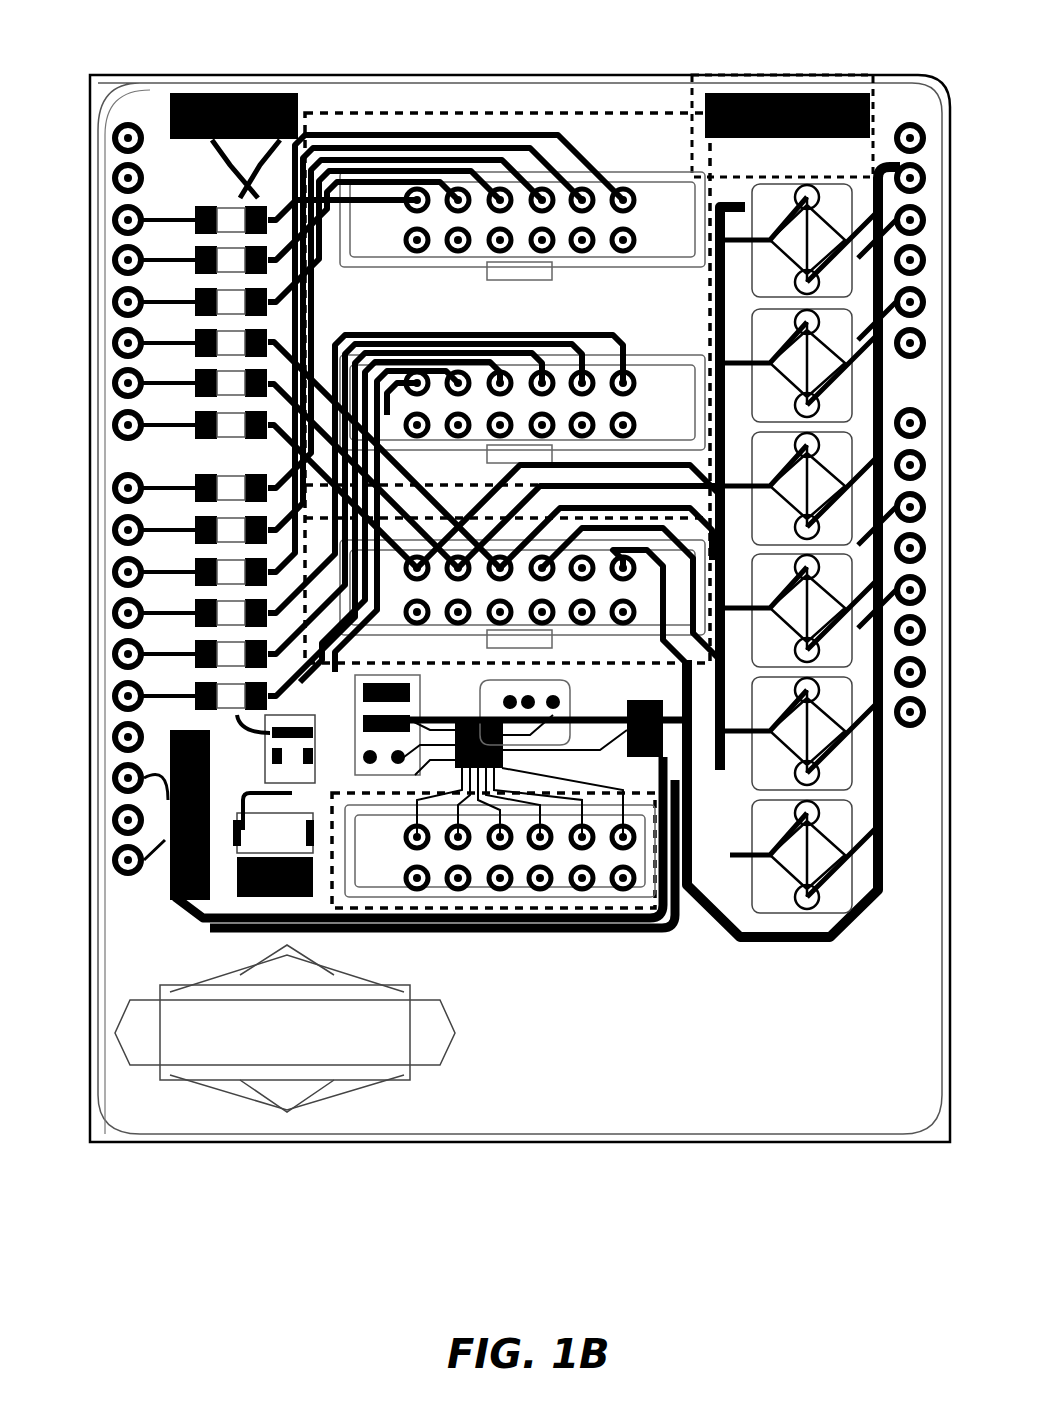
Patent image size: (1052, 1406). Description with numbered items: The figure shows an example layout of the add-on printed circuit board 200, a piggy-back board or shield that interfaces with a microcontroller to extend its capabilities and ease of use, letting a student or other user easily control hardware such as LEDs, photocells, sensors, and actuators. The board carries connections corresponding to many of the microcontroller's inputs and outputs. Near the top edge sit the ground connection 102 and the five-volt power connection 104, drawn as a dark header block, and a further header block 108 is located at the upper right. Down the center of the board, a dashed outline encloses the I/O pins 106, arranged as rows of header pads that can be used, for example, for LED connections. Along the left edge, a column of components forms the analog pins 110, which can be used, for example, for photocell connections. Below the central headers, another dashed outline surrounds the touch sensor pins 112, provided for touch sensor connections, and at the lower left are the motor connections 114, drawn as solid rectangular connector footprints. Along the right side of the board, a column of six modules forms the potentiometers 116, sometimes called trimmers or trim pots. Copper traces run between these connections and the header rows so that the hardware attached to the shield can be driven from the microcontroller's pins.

The HyperDuino shield circuit board 200 is at (112, 52).
The ground connection 102 is at (196, 94).
The power connection 104 is at (243, 94).
The I/O pins 106 is at (363, 112).
The I2C / power header 108 is at (746, 73).
The analog pins 110 is at (307, 637).
The touch sensor pins 112 is at (330, 893).
The motor connections 114 is at (230, 900).
The potentiometers 116 is at (848, 904).